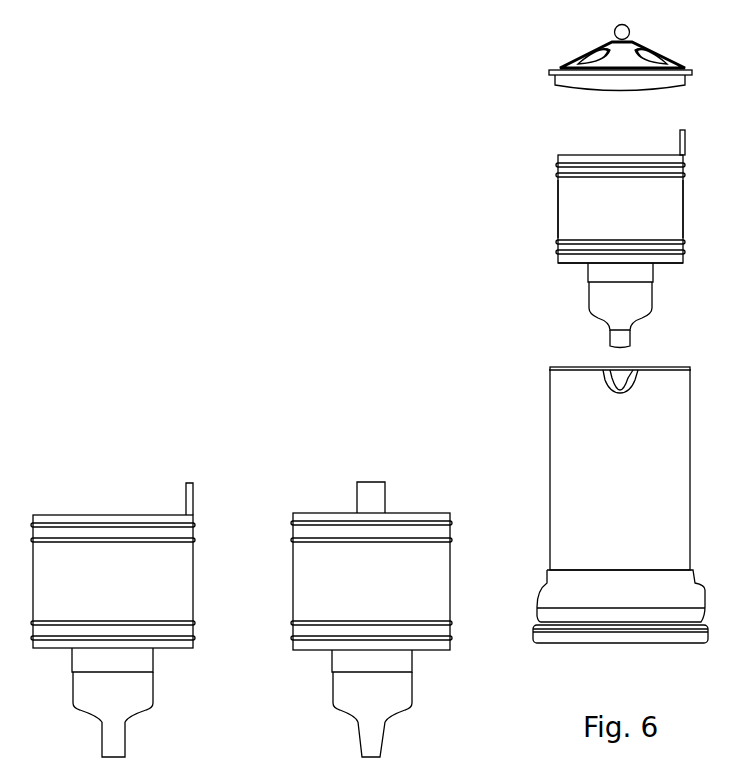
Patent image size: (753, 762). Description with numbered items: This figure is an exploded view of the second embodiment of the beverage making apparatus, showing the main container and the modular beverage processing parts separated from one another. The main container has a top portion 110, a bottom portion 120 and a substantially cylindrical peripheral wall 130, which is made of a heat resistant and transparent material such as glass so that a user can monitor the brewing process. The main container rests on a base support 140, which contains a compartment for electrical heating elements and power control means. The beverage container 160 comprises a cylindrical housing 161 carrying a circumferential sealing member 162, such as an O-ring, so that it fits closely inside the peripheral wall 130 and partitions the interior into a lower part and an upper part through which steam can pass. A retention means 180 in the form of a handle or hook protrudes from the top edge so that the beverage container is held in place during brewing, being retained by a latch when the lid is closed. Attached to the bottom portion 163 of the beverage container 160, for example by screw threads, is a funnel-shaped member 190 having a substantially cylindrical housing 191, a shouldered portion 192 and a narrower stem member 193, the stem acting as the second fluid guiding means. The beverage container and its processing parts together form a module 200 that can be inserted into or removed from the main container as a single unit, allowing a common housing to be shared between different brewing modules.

The top portion 110 is at (643, 488).
The bottom portion 120 is at (620, 567).
The peripheral wall 130 is at (690, 473).
The base support 140 is at (708, 607).
The beverage container 160 is at (516, 397).
The cylindrical housing 161 is at (684, 214).
The circumferential sealing member 162 is at (556, 167).
The bottom portion 163 is at (678, 264).
The retention means 180 is at (688, 132).
The funnel-shaped member 190 is at (372, 510).
The cylindrical housing 191 is at (151, 682).
The shouldered portion 192 is at (143, 717).
The stem member 193 is at (632, 334).
The module 200 is at (470, 548).